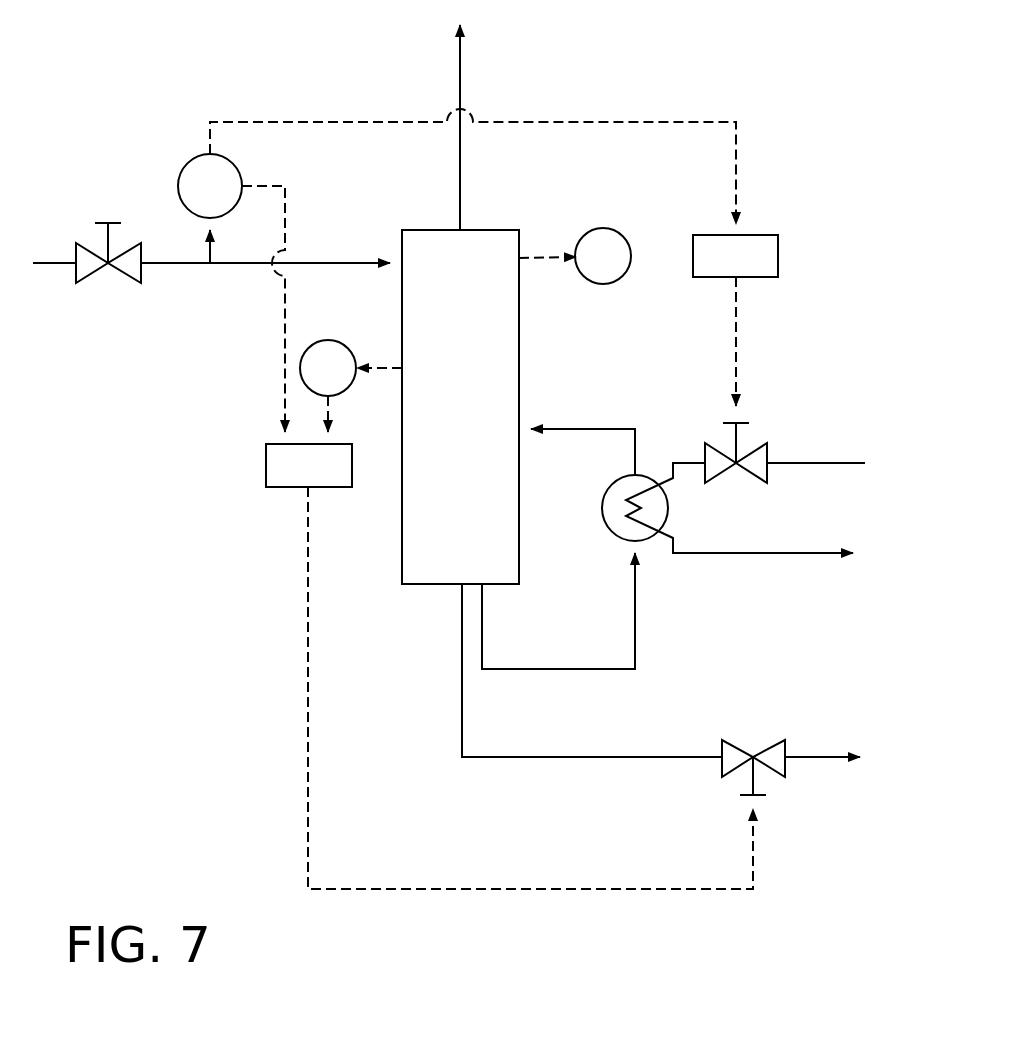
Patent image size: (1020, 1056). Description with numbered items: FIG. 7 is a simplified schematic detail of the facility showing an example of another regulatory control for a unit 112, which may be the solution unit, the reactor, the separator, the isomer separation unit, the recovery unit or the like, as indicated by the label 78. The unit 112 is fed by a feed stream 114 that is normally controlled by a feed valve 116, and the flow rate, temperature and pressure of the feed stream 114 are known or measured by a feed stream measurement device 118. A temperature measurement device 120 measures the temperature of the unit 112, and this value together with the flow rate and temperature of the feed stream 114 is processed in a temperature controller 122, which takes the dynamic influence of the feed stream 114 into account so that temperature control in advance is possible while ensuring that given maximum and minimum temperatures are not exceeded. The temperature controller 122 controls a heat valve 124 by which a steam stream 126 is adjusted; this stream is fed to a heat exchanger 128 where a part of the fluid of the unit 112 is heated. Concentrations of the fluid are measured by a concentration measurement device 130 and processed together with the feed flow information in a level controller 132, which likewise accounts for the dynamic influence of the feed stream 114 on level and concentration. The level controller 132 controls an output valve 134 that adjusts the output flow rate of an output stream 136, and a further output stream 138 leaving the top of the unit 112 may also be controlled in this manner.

The reactor system 78 is at (495, 237).
The unit 112 is at (486, 421).
The feed stream 114 is at (170, 263).
The feed valve 116 is at (120, 273).
The feed stream measurement device 118 is at (180, 170).
The temperature measurement device 120 is at (605, 284).
The temperature controller 122 is at (760, 235).
The heat valve 124 is at (752, 445).
The steam stream 126 is at (820, 463).
The heat exchanger 128 is at (612, 535).
The concentration measurement device 130 is at (328, 338).
The level controller 132 is at (266, 467).
The output valve 134 is at (728, 742).
The output stream 136 is at (563, 757).
The further output stream 138 is at (461, 68).